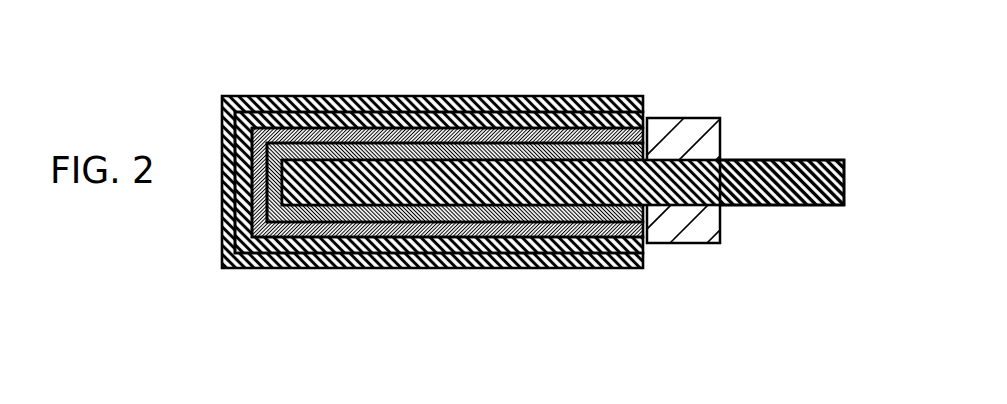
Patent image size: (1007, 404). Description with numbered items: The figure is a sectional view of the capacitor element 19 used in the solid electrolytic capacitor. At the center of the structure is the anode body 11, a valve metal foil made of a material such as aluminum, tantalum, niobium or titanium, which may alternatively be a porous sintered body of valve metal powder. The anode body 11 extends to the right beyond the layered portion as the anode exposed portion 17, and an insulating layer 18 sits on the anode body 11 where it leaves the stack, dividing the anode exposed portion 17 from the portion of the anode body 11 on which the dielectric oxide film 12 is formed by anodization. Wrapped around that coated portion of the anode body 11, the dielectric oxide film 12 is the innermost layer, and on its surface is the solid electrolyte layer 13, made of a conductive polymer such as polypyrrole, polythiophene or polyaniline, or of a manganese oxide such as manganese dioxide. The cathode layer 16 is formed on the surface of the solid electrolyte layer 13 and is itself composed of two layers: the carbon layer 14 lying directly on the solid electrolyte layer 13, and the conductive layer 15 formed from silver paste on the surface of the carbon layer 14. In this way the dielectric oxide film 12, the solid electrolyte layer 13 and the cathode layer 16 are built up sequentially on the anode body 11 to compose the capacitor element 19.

The anode body 11 is at (477, 177).
The dielectric oxide film 12 is at (488, 213).
The solid electrolyte layer 13 is at (380, 230).
The carbon layer 14 is at (217, 307).
The conductive layer 15 is at (237, 267).
The cathode layer 16 is at (430, 228).
The anode exposed portion 17 is at (760, 175).
The insulating layer 18 is at (680, 130).
The capacitor element 19 is at (428, 194).